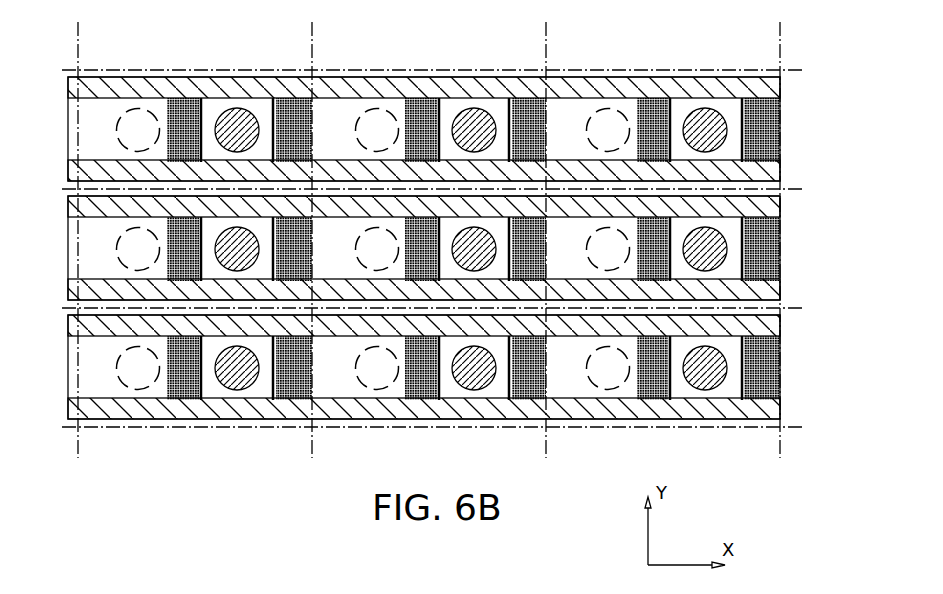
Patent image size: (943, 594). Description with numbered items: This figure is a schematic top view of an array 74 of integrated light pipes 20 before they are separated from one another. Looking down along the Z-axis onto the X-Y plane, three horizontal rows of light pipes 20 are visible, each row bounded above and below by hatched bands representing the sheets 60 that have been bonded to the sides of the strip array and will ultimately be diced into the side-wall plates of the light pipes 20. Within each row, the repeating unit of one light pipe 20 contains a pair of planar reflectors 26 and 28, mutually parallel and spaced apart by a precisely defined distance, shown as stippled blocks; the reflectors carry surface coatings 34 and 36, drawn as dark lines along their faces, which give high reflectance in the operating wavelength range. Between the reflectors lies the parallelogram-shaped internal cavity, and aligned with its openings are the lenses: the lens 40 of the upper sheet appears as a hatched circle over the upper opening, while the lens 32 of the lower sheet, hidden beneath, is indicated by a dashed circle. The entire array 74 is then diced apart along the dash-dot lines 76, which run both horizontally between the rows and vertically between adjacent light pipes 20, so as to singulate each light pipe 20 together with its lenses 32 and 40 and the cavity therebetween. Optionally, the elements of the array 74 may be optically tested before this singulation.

The light pipe 20 is at (307, 57).
The planar reflector 26 is at (650, 387).
The planar reflector 28 is at (770, 385).
The lens 32 is at (590, 380).
The surface coating 34 is at (672, 380).
The surface coating 36 is at (745, 355).
The lens 40 is at (708, 385).
The sheet 60 is at (770, 90).
The array 74 is at (58, 76).
The dicing line 76 is at (310, 33).